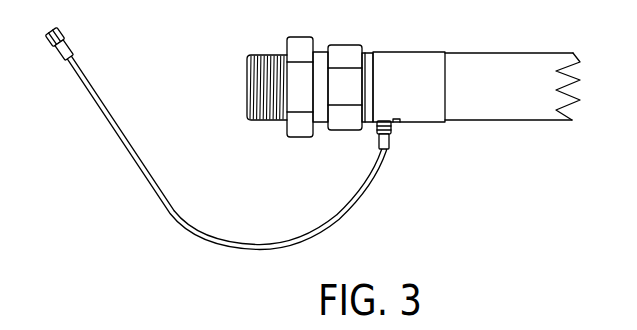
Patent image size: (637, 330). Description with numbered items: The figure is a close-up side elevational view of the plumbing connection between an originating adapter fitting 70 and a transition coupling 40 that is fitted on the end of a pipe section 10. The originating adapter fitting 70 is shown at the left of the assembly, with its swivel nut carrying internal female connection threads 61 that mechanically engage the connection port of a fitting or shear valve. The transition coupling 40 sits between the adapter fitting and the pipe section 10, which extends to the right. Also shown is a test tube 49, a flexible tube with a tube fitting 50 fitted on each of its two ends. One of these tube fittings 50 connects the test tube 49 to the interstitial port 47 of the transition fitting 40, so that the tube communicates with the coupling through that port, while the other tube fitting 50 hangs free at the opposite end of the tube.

The pipe section 10 is at (512, 90).
The transition coupling 40 is at (407, 92).
The interstitial port 47 is at (398, 124).
The test tube 49 is at (196, 220).
The tube fitting 50 is at (53, 48).
The female connection threads 61 is at (257, 80).
The originating adapter fitting 70 is at (302, 98).